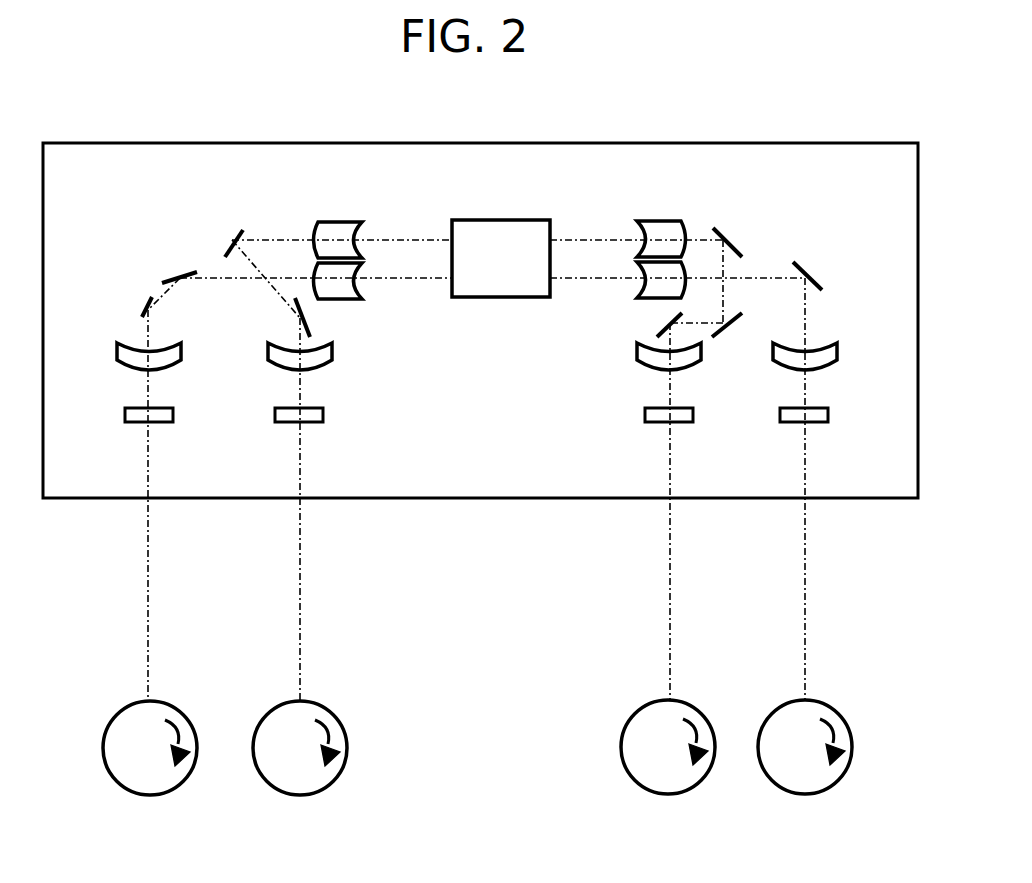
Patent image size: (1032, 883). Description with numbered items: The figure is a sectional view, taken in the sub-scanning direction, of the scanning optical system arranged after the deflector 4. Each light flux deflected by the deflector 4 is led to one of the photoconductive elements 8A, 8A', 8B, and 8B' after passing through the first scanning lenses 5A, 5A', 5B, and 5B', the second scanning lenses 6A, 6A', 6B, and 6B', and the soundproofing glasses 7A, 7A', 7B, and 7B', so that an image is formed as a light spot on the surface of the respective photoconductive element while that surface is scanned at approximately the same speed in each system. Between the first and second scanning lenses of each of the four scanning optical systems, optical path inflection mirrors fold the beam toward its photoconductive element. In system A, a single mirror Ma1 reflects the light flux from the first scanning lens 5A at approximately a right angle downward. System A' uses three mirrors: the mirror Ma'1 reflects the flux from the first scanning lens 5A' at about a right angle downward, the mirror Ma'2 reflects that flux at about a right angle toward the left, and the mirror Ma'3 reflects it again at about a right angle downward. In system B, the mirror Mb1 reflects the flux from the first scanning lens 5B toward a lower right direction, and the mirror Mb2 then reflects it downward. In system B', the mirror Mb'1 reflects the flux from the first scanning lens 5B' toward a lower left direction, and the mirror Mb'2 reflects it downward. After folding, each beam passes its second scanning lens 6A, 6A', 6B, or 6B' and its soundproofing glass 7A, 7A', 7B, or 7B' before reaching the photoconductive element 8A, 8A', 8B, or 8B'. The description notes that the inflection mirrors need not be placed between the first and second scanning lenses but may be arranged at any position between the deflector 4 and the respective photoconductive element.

The deflector 4 is at (540, 220).
The optical path inflection mirror Mb1 is at (227, 245).
The optical path inflection mirror Mb'1 is at (178, 258).
The optical path inflection mirror Mb'2 is at (114, 293).
The optical path inflection mirror Mb2 is at (305, 322).
The optical path inflection mirror Ma'1 is at (750, 232).
The optical path inflection mirror Ma1 is at (806, 275).
The optical path inflection mirror Ma'2 is at (756, 311).
The optical path inflection mirror Ma'3 is at (647, 322).
The first scanning lens 5B is at (345, 220).
The first scanning lens 5B' is at (371, 296).
The first scanning lens 5A' is at (663, 219).
The first scanning lens 5A is at (631, 288).
The second scanning lens 6B' is at (180, 362).
The second scanning lens 6B is at (330, 364).
The second scanning lens 6A' is at (700, 362).
The second scanning lens 6A is at (832, 364).
The soundproofing glass 7B' is at (181, 433).
The soundproofing glass 7B is at (329, 433).
The soundproofing glass 7A' is at (699, 433).
The soundproofing glass 7A is at (831, 433).
The photoconductive element 8B' is at (150, 776).
The photoconductive element 8B is at (300, 776).
The photoconductive element 8A' is at (668, 776).
The photoconductive element 8A is at (805, 776).